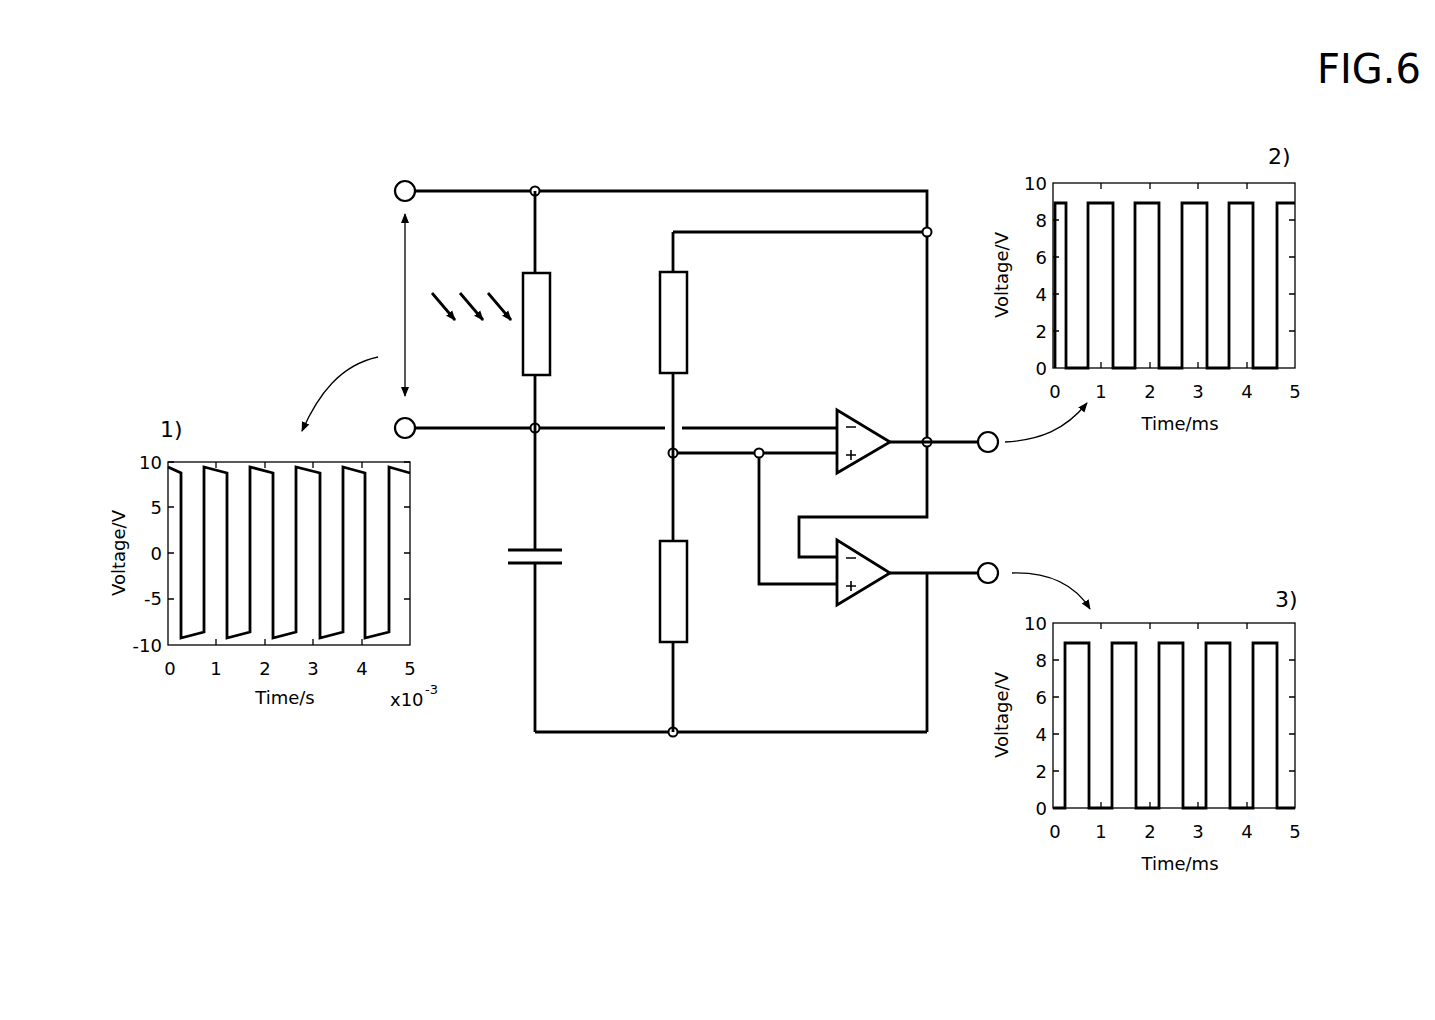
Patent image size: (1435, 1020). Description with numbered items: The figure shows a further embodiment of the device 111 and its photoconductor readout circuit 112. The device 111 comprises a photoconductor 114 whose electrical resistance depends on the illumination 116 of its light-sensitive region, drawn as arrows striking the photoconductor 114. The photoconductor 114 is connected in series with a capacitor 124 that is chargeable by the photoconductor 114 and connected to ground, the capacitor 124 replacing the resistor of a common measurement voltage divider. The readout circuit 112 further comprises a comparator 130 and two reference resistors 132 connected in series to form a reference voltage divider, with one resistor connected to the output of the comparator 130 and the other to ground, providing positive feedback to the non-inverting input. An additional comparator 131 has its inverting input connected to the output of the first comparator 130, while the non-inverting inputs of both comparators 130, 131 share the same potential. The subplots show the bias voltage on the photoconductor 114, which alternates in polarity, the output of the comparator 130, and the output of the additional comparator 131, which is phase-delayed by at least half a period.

The device 111 is at (760, 149).
The photoconductor readout circuit 112 is at (723, 408).
The photoconductor 114 is at (551, 279).
The illumination 116 is at (503, 300).
The capacitor 124 is at (530, 572).
The comparator 130 is at (858, 407).
The additional comparator 131 is at (862, 606).
The reference resistors 132 is at (688, 368).